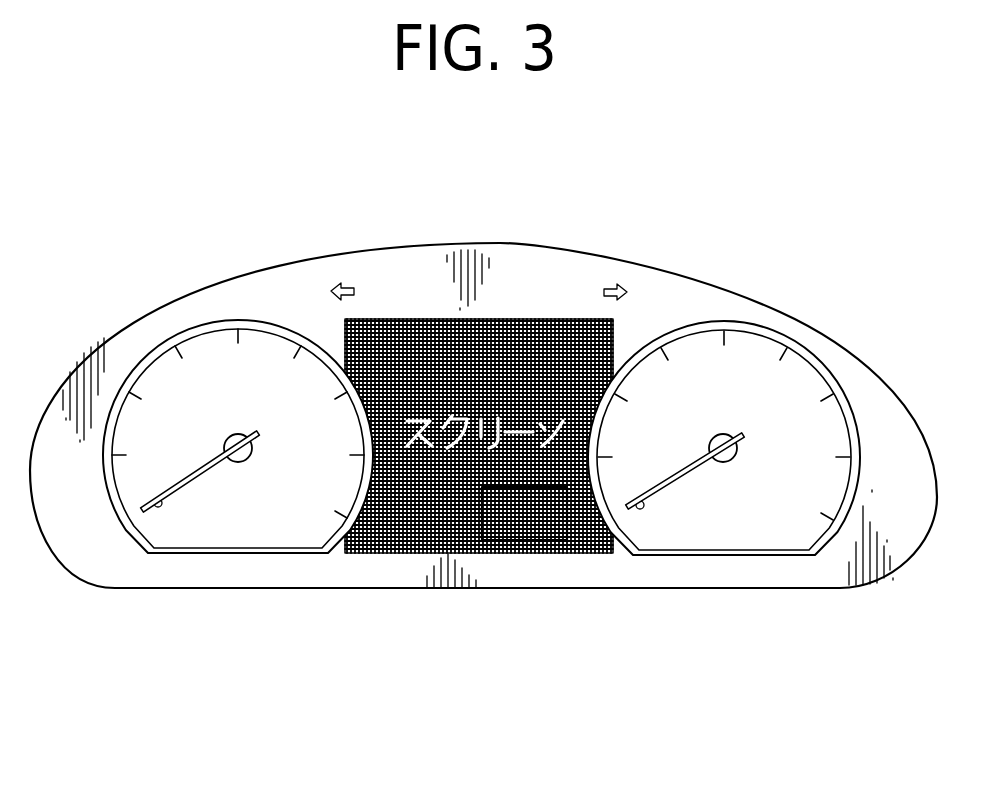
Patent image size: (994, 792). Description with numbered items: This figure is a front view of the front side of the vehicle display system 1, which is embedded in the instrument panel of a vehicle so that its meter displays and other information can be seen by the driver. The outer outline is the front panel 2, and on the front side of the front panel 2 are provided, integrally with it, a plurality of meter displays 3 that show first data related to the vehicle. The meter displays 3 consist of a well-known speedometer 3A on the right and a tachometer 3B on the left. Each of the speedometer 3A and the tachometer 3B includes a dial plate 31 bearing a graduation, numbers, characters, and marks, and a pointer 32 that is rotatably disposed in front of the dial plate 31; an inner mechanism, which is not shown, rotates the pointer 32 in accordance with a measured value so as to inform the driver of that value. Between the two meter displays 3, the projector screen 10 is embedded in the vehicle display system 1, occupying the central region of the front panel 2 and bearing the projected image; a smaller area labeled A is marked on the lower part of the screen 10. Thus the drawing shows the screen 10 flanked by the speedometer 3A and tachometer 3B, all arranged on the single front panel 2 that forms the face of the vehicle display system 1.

The vehicle display system 1 is at (515, 233).
The front panel 2 is at (412, 277).
The projector screen 10 is at (528, 310).
The meter displays 3 is at (481, 447).
The speedometer 3A is at (733, 510).
The tachometer 3B is at (245, 508).
The dial plate 31 is at (210, 360).
The pointer 32 is at (207, 477).
The display area of screen A is at (523, 555).